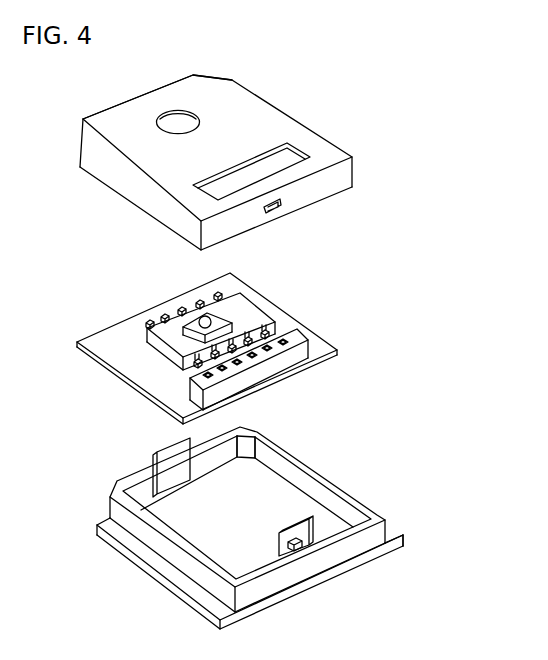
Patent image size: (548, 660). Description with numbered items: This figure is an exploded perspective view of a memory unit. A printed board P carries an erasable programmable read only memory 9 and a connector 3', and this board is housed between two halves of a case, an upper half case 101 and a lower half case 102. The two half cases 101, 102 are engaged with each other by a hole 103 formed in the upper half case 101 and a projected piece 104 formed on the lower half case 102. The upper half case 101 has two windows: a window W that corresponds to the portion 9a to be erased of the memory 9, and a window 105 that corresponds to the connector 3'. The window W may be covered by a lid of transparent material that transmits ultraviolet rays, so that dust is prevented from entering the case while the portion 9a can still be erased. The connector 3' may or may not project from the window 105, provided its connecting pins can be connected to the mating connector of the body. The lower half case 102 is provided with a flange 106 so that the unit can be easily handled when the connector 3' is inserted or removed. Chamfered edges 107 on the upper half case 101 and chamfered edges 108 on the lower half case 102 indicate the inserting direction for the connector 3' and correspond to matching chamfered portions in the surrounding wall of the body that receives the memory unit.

The half case 101 is at (332, 187).
The half case 102 is at (363, 553).
The hole 103 is at (274, 213).
The projected piece 104 is at (297, 553).
The window 105 is at (287, 164).
The flange 106 is at (395, 528).
The chamfered edge 107 is at (215, 79).
The chamfered edge 108 is at (112, 489).
The window W is at (170, 121).
The printed board P is at (112, 333).
The erasable programmable read only memory 9 is at (253, 314).
The portion to be erased 9a is at (203, 321).
The connector 3' is at (262, 369).